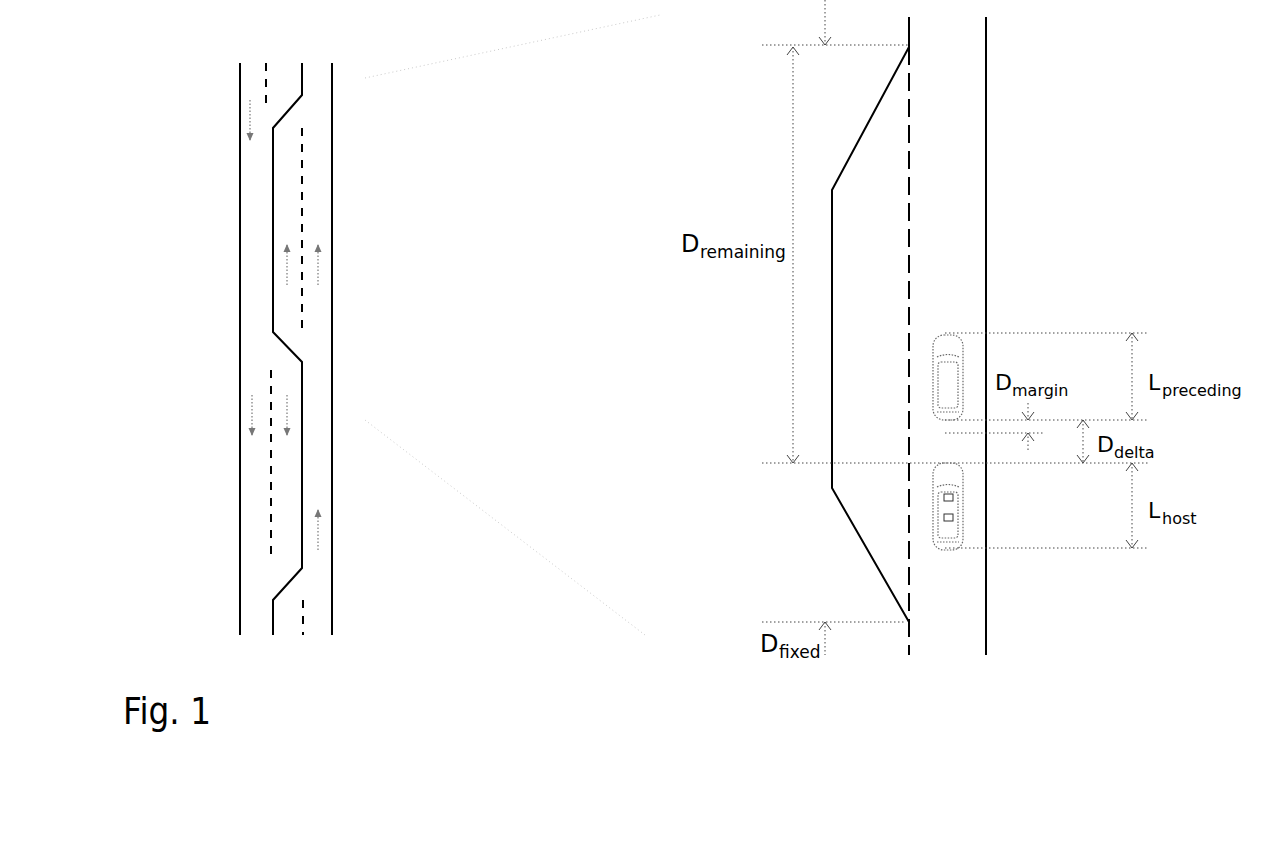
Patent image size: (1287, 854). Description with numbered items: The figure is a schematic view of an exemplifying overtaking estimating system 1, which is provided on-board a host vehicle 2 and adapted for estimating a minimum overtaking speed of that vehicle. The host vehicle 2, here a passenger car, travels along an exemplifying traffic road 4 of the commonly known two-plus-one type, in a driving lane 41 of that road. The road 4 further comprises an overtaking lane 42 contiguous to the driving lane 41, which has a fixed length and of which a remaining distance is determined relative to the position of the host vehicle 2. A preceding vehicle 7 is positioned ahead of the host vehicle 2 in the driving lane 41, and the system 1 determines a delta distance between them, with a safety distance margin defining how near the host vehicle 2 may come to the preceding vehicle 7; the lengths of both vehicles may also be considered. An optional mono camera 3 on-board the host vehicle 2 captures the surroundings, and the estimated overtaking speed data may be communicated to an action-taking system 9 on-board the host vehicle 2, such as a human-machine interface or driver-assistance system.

The overtaking estimating system 1 is at (695, 714).
The host vehicle 2 is at (982, 552).
The mono camera 3 is at (952, 499).
The traffic road 4 is at (197, 192).
The driving lane 41 is at (962, 114).
The overtaking lane 42 is at (892, 210).
The preceding vehicle 7 is at (968, 325).
The action-taking system 9 is at (952, 521).